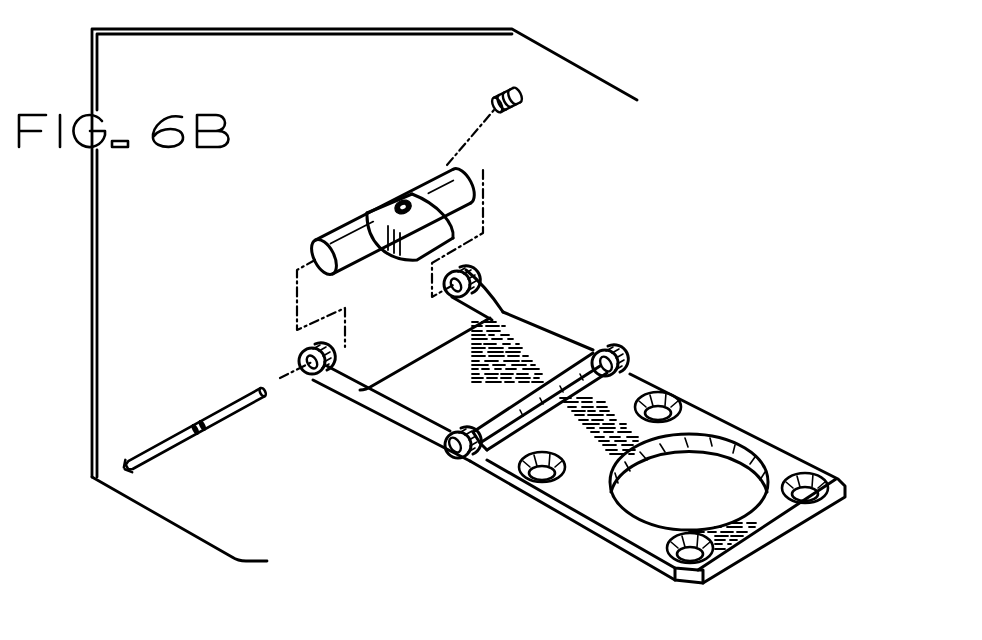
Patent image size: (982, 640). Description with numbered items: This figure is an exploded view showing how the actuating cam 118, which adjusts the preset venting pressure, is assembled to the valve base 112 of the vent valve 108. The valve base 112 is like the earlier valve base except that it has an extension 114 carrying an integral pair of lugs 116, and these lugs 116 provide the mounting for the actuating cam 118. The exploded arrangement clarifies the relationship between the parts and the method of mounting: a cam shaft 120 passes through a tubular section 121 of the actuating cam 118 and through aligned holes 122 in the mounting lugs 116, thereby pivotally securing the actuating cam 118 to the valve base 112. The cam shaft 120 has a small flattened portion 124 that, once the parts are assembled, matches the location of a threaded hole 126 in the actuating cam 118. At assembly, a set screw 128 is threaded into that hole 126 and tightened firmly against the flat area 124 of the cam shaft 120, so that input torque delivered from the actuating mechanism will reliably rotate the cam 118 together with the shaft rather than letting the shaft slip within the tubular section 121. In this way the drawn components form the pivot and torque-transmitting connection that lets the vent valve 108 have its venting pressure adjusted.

The vent valve 108 is at (325, 244).
The valve base 112 is at (657, 478).
The extension 114 is at (541, 409).
The lugs 116 is at (426, 360).
The actuating cam 118 is at (460, 227).
The cam shaft 120 is at (188, 430).
The tubular section 121 is at (374, 222).
The aligned holes 122 is at (445, 366).
The flattened portion 124 is at (233, 449).
The threaded hole 126 is at (369, 191).
The set screw 128 is at (468, 100).